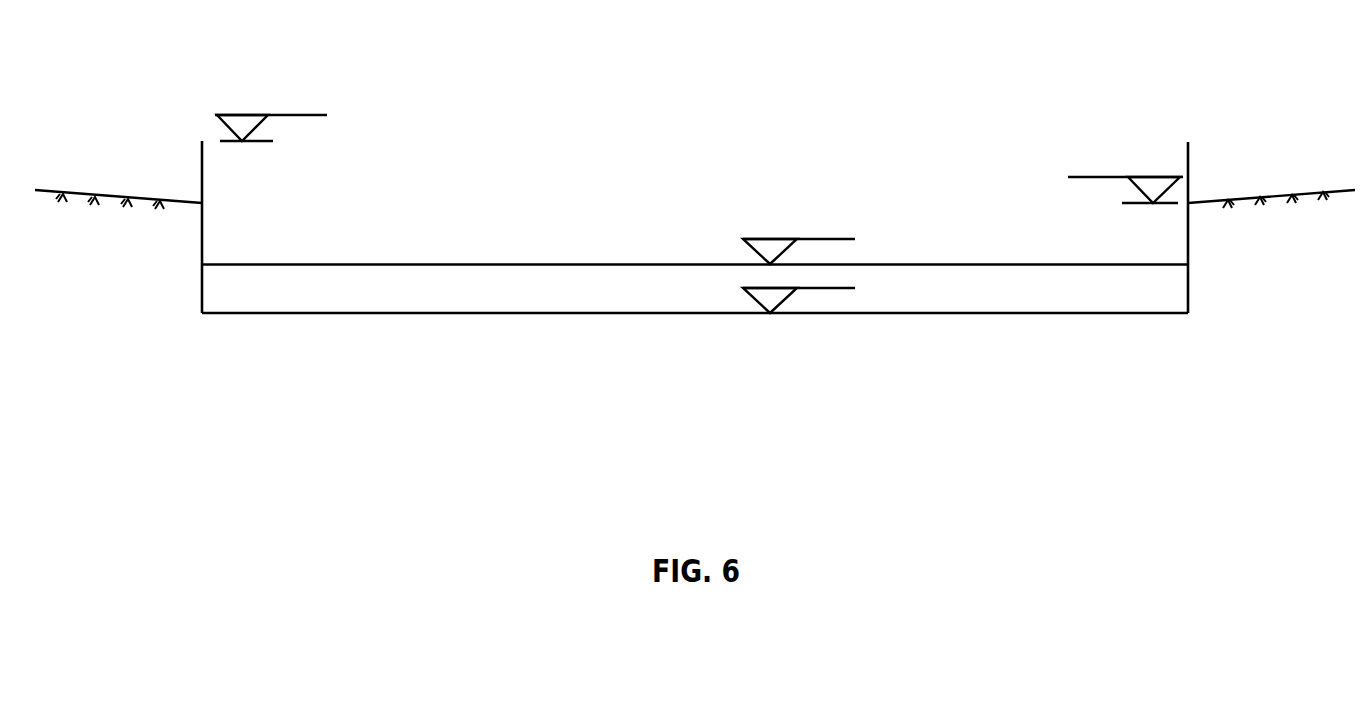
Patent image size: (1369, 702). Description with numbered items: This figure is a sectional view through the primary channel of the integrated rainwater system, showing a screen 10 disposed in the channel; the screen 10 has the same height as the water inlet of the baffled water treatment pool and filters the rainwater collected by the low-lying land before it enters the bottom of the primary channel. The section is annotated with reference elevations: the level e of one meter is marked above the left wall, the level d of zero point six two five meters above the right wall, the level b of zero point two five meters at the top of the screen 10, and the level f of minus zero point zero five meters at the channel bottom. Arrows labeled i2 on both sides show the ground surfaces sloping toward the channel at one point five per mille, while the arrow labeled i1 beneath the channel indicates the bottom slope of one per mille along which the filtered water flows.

The screen 10 is at (537, 263).
The elevation e is at (271, 99).
The elevation d is at (1125, 159).
The elevation b is at (799, 220).
The elevation f is at (799, 333).
The slope i1 is at (633, 333).
The slope i2 is at (77, 157).